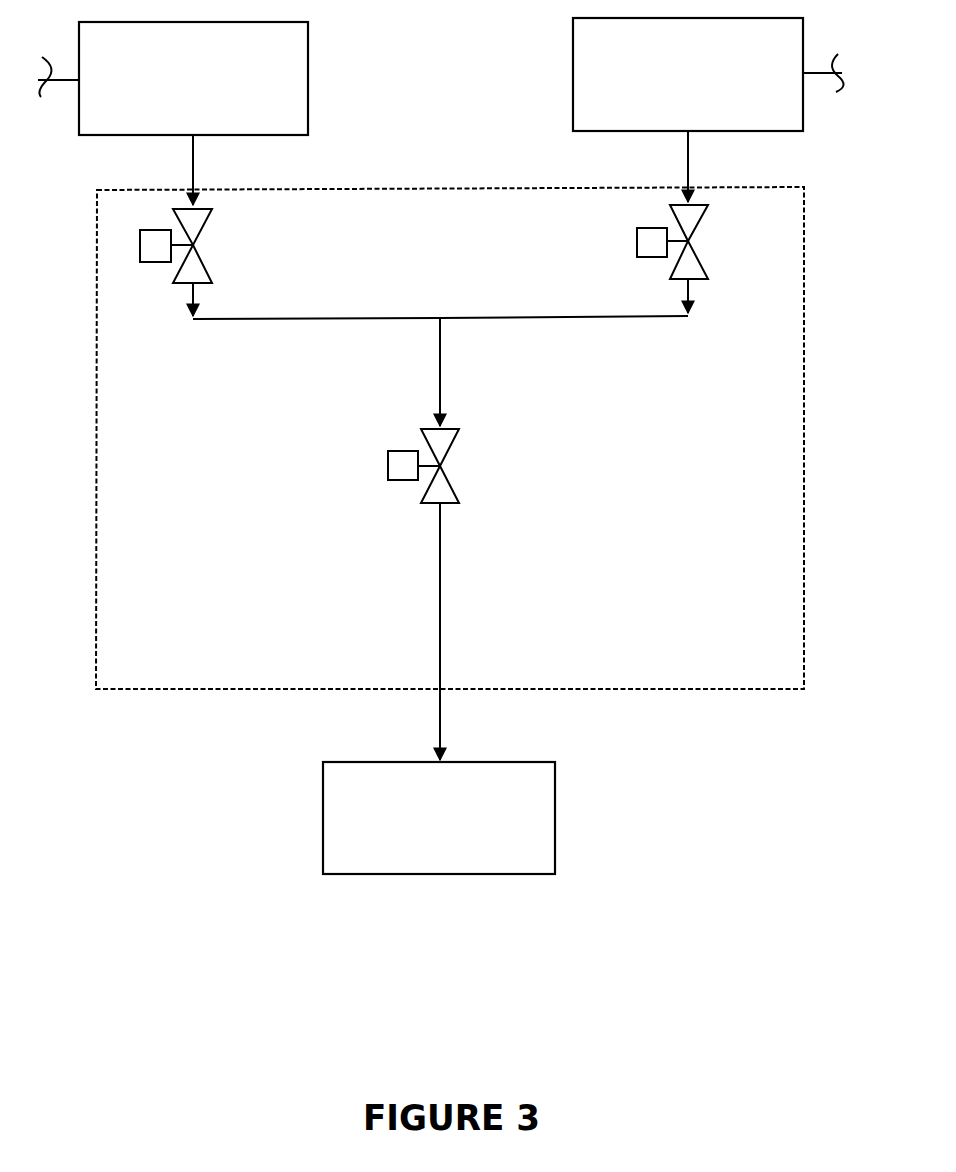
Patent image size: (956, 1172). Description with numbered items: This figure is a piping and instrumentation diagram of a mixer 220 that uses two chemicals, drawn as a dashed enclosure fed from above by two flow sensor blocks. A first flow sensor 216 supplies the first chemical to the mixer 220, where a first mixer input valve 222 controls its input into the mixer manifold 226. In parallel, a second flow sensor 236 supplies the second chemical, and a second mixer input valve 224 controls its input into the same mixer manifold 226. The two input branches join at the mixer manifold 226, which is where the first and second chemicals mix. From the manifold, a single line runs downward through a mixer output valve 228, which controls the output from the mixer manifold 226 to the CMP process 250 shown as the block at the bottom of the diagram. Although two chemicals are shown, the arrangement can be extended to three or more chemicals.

The first flow sensor 216 is at (308, 68).
The second flow sensor 236 is at (573, 59).
The mixer 220 is at (805, 315).
The first mixer input valve 222 is at (202, 227).
The second mixer input valve 224 is at (700, 222).
The mixer manifold 226 is at (533, 318).
The mixer output valve 228 is at (450, 448).
The CMP process 250 is at (555, 767).